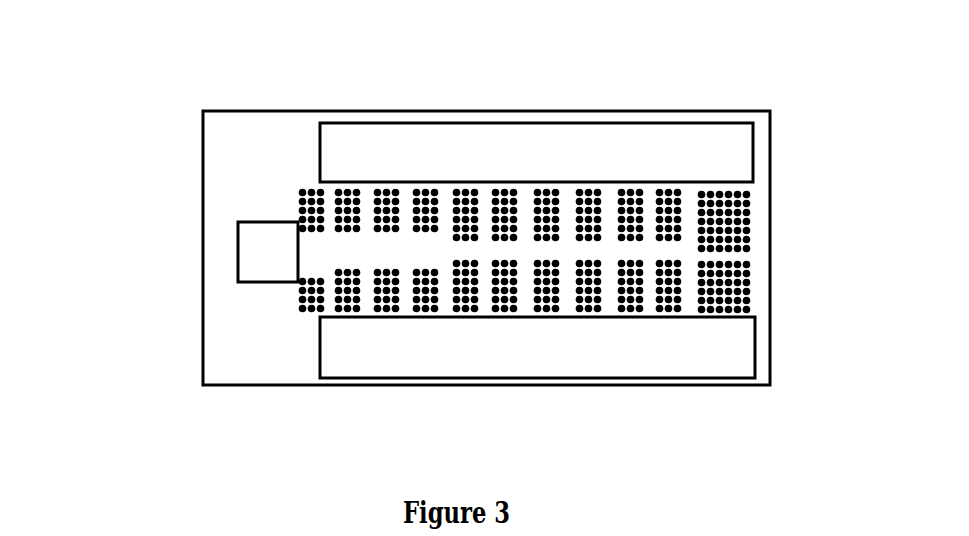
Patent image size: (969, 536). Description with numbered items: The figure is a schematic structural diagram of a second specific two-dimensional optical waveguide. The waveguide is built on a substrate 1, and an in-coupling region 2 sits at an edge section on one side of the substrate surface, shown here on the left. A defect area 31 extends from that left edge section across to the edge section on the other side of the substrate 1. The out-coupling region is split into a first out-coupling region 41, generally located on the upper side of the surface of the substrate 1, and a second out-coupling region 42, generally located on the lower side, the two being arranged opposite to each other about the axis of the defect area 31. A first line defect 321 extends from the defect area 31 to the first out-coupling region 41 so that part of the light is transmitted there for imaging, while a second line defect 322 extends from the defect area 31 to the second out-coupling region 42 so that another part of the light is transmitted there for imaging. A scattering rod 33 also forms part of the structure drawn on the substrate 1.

The substrate 1 is at (272, 140).
The in-coupling region 2 is at (263, 252).
The defect area 31 is at (462, 213).
The first line defect 321 is at (522, 213).
The second line defect 322 is at (300, 297).
The scattering rod 33 is at (733, 187).
The first out-coupling region 41 is at (455, 150).
The second out-coupling region 42 is at (455, 353).